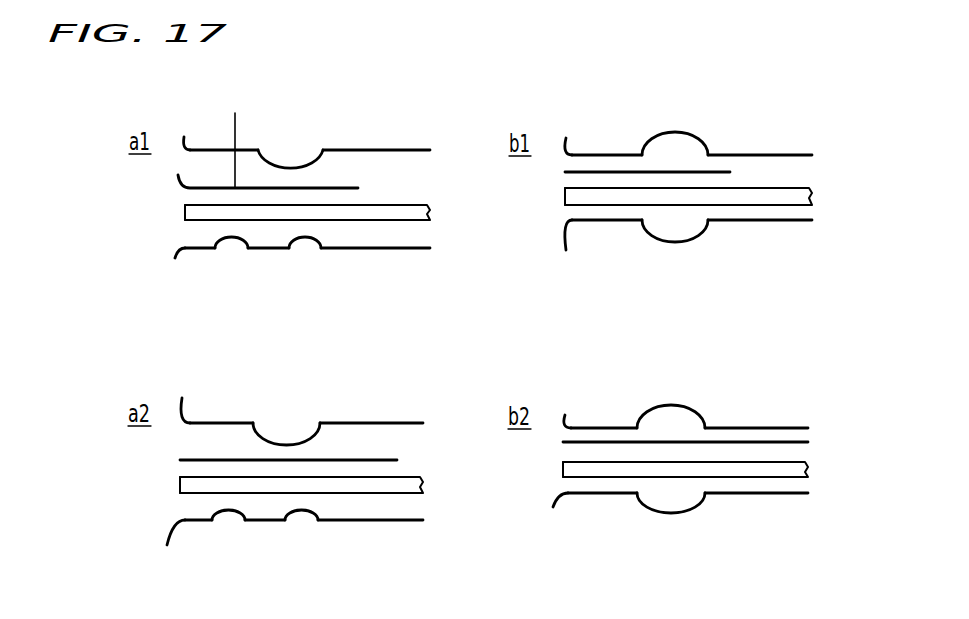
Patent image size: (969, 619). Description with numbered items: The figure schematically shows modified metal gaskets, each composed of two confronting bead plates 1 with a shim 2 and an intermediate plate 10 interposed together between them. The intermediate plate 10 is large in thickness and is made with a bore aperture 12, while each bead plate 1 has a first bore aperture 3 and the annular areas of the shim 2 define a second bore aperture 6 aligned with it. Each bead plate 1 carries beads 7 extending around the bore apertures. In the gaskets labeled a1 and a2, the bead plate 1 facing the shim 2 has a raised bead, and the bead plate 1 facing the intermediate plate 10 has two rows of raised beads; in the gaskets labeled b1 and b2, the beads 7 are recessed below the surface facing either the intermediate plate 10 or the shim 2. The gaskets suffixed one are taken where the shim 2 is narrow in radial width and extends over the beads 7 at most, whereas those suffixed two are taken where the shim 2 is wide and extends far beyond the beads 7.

The bead plate 1 is at (386, 150).
The shim 2 is at (608, 442).
The first bore aperture 3 is at (364, 338).
The second bore aperture 6 is at (563, 443).
The bead 7 is at (288, 171).
The intermediate plate 10 is at (384, 214).
The bore aperture 12 is at (184, 207).